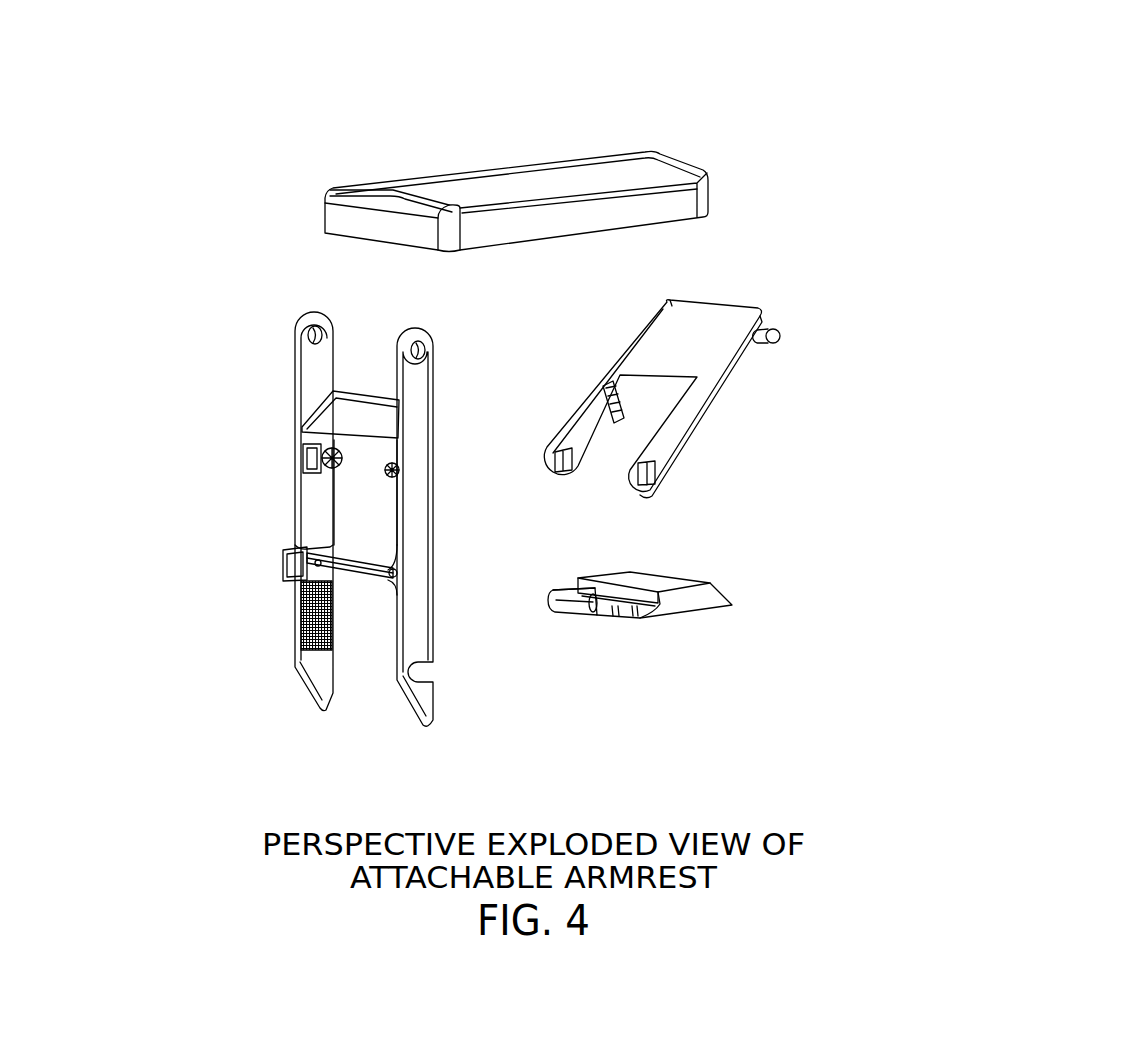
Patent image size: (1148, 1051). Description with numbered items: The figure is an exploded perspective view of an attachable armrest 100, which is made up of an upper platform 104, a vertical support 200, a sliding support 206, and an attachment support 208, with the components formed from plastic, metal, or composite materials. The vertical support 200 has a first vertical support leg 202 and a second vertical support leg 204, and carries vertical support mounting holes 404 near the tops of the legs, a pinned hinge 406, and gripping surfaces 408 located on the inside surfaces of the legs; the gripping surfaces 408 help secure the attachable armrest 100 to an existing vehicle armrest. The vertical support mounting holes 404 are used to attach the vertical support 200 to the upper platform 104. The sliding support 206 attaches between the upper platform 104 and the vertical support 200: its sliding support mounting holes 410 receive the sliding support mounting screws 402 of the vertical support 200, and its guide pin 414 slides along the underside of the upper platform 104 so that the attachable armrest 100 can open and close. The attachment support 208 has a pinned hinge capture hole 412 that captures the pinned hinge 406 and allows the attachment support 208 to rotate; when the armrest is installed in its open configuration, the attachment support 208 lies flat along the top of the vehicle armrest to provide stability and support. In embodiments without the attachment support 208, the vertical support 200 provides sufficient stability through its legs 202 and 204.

The attachable armrest 100 is at (771, 54).
The upper platform 104 is at (416, 166).
The vertical support 200 is at (270, 405).
The first vertical support leg 202 is at (314, 699).
The second vertical support leg 204 is at (430, 722).
The sliding support 206 is at (605, 333).
The attachment support 208 is at (717, 619).
The sliding support mounting screws 402 is at (386, 470).
The vertical support mounting holes 404 is at (394, 333).
The pinned hinge 406 is at (271, 563).
The gripping surfaces 408 is at (386, 627).
The sliding support mounting holes 410 is at (577, 470).
The pinned hinge capture hole 412 is at (592, 618).
The guide pin 414 is at (795, 345).